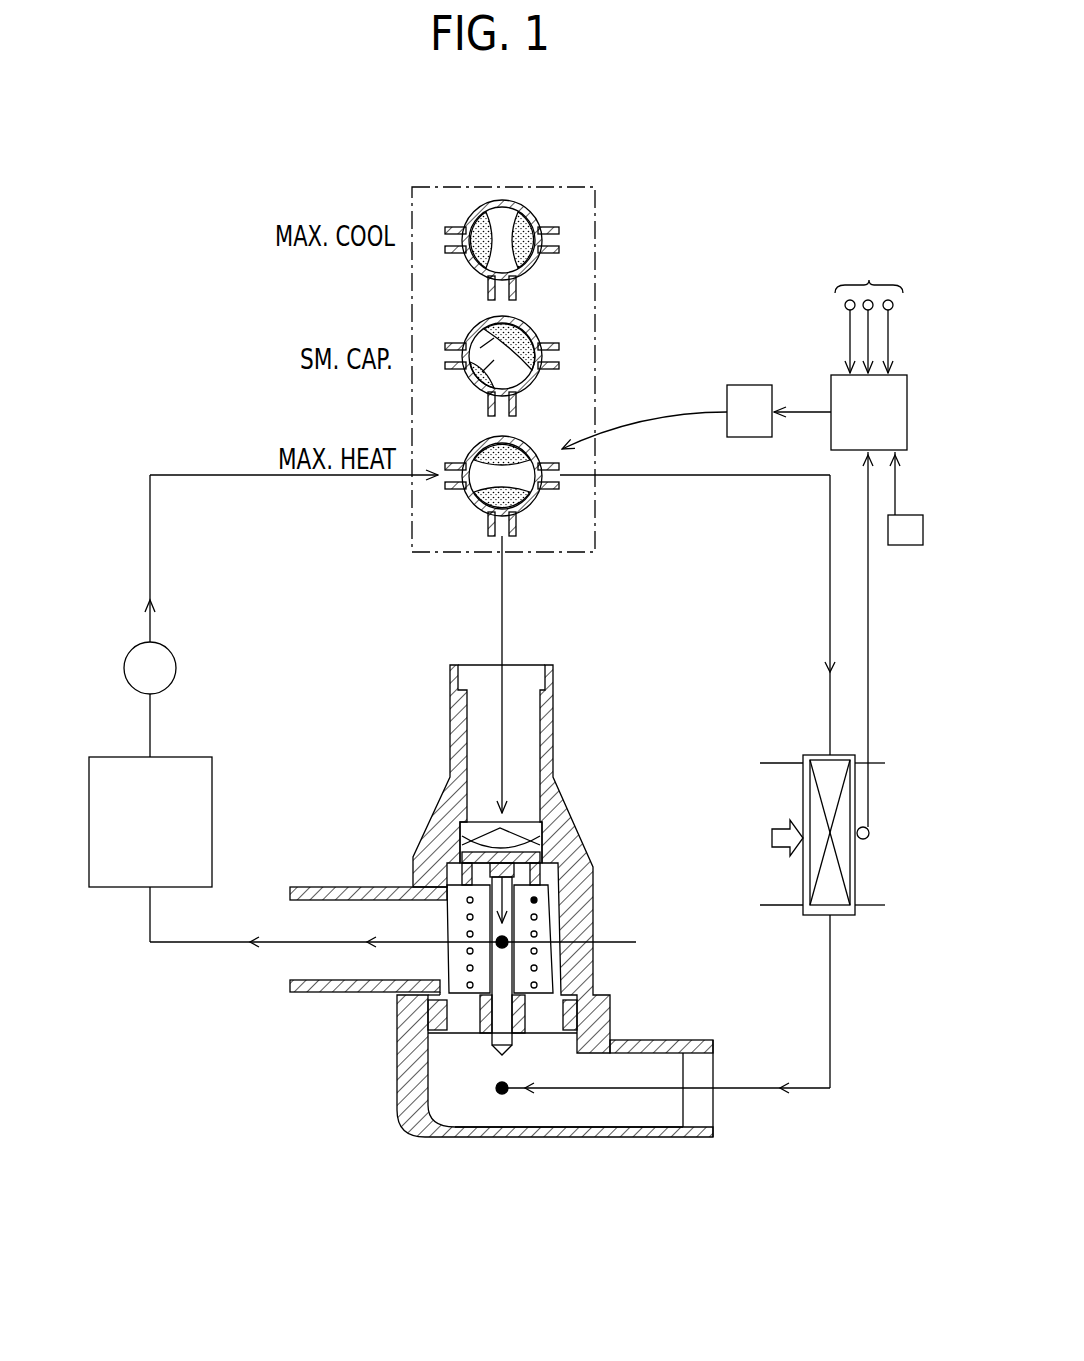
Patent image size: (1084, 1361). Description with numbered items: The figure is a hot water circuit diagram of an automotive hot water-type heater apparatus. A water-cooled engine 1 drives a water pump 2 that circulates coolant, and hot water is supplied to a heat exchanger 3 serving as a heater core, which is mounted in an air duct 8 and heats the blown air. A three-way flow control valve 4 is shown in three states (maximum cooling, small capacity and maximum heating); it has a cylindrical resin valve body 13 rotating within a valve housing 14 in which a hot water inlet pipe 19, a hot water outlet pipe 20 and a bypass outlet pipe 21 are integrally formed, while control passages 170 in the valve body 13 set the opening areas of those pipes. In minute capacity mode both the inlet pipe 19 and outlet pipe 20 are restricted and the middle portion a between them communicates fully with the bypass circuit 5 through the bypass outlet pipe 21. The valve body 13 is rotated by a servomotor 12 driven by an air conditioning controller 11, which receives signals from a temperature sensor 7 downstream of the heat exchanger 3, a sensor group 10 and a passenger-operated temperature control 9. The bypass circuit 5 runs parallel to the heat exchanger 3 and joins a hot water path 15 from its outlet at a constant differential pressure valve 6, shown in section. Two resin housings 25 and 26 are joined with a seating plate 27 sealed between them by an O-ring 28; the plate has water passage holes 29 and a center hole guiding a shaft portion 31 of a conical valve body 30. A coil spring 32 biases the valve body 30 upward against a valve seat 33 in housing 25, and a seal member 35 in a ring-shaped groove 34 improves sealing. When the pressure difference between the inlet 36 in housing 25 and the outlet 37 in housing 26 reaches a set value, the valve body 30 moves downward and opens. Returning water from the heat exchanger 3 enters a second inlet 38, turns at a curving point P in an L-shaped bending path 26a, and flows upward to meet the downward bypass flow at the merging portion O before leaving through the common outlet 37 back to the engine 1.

The engine 1 is at (212, 777).
The water pump 2 is at (177, 668).
The heat exchanger 3 is at (853, 868).
The flow control valve 4 is at (604, 391).
The bypass circuit 5 is at (500, 580).
The constant differential pressure valve 6 is at (438, 775).
The temperature sensor 7 is at (868, 827).
The air duct 8 is at (880, 908).
The temperature control 9 is at (905, 547).
The sensor group 10 is at (869, 309).
The air conditioning controller 11 is at (831, 390).
The servomotor 12 is at (745, 386).
The valve body 13 is at (541, 224).
The valve housing 14 is at (545, 345).
The hot water path 15 is at (748, 1093).
The hot water inlet pipe 19 is at (470, 338).
The hot water outlet pipe 20 is at (560, 359).
The bypass outlet pipe 21 is at (478, 402).
The control passages 170 is at (478, 325).
The middle portion a is at (470, 394).
The housing 25 is at (585, 892).
The housing 26 is at (410, 1115).
The bending path 26a is at (560, 1105).
The seating plate 27 is at (450, 1032).
The O-ring 28 is at (428, 1020).
The water passage holes 29 is at (475, 1035).
The valve body 30 is at (535, 840).
The shaft portion 31 is at (512, 970).
The coil spring 32 is at (536, 900).
The valve seat 33 is at (565, 850).
The ring-shaped groove 34 is at (470, 838).
The seal member 35 is at (462, 858).
The inlet 36 is at (486, 672).
The outlet 37 is at (345, 965).
The second inlet 38 is at (660, 1108).
The merging portion O is at (650, 941).
The curving point P is at (505, 1096).